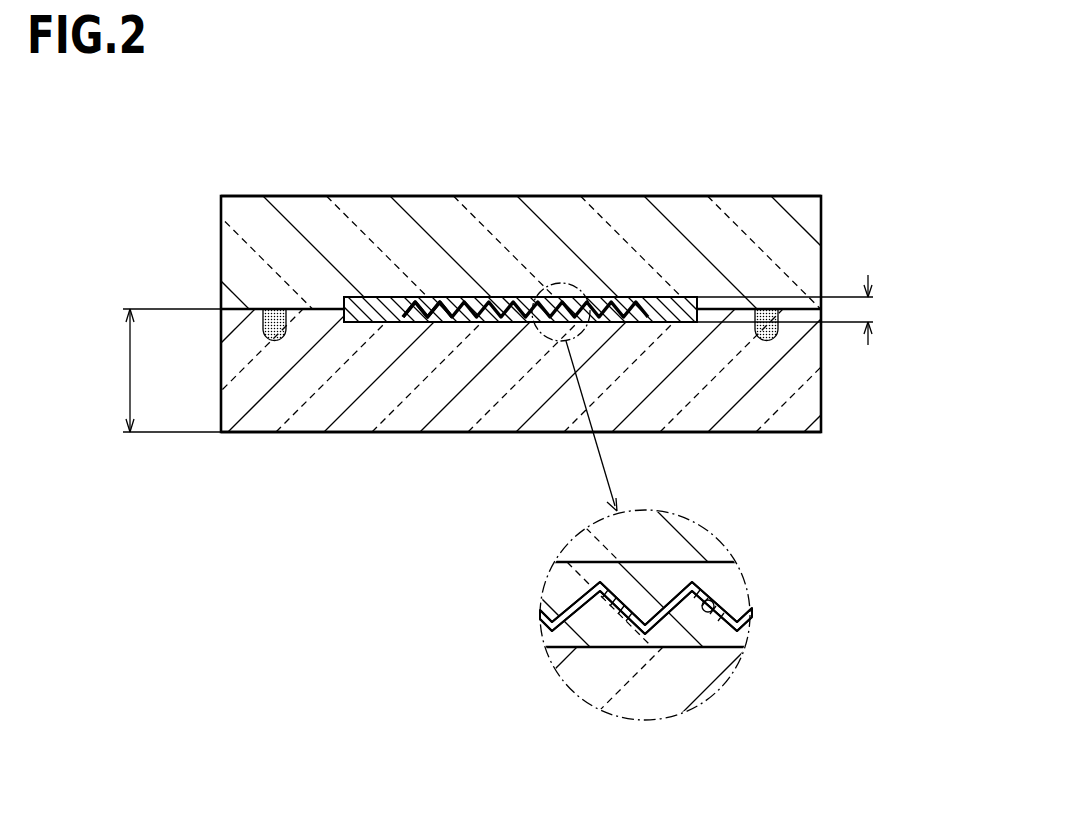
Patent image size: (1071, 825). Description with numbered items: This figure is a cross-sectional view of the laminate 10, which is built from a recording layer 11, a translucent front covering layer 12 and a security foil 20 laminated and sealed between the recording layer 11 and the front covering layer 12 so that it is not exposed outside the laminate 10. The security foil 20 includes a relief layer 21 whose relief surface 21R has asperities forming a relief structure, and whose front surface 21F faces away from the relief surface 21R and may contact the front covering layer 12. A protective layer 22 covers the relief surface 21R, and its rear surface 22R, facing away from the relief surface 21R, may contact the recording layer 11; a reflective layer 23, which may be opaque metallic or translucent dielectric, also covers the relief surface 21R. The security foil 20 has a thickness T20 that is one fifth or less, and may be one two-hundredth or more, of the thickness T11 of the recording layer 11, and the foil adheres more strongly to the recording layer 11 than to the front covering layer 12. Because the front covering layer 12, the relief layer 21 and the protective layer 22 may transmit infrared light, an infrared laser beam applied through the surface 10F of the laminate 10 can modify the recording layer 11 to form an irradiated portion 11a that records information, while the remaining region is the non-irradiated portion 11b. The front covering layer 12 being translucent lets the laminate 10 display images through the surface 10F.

The laminate 10 is at (802, 168).
The surface of the laminate 10F is at (252, 196).
The recording layer 11 is at (821, 396).
The irradiated portion 11a is at (262, 331).
The non-irradiated portion 11b is at (255, 433).
The front covering layer 12 is at (821, 212).
The security foil 20 is at (393, 345).
The relief layer 21 is at (508, 297).
The front surface of the relief layer 21F is at (401, 297).
The relief surface 21R is at (714, 603).
The protective layer 22 is at (493, 323).
The rear surface of the protective layer 22R is at (438, 323).
The reflective layer 23 is at (752, 613).
The thickness of the recording layer T11 is at (151, 370).
The thickness of the security foil T20 is at (808, 310).